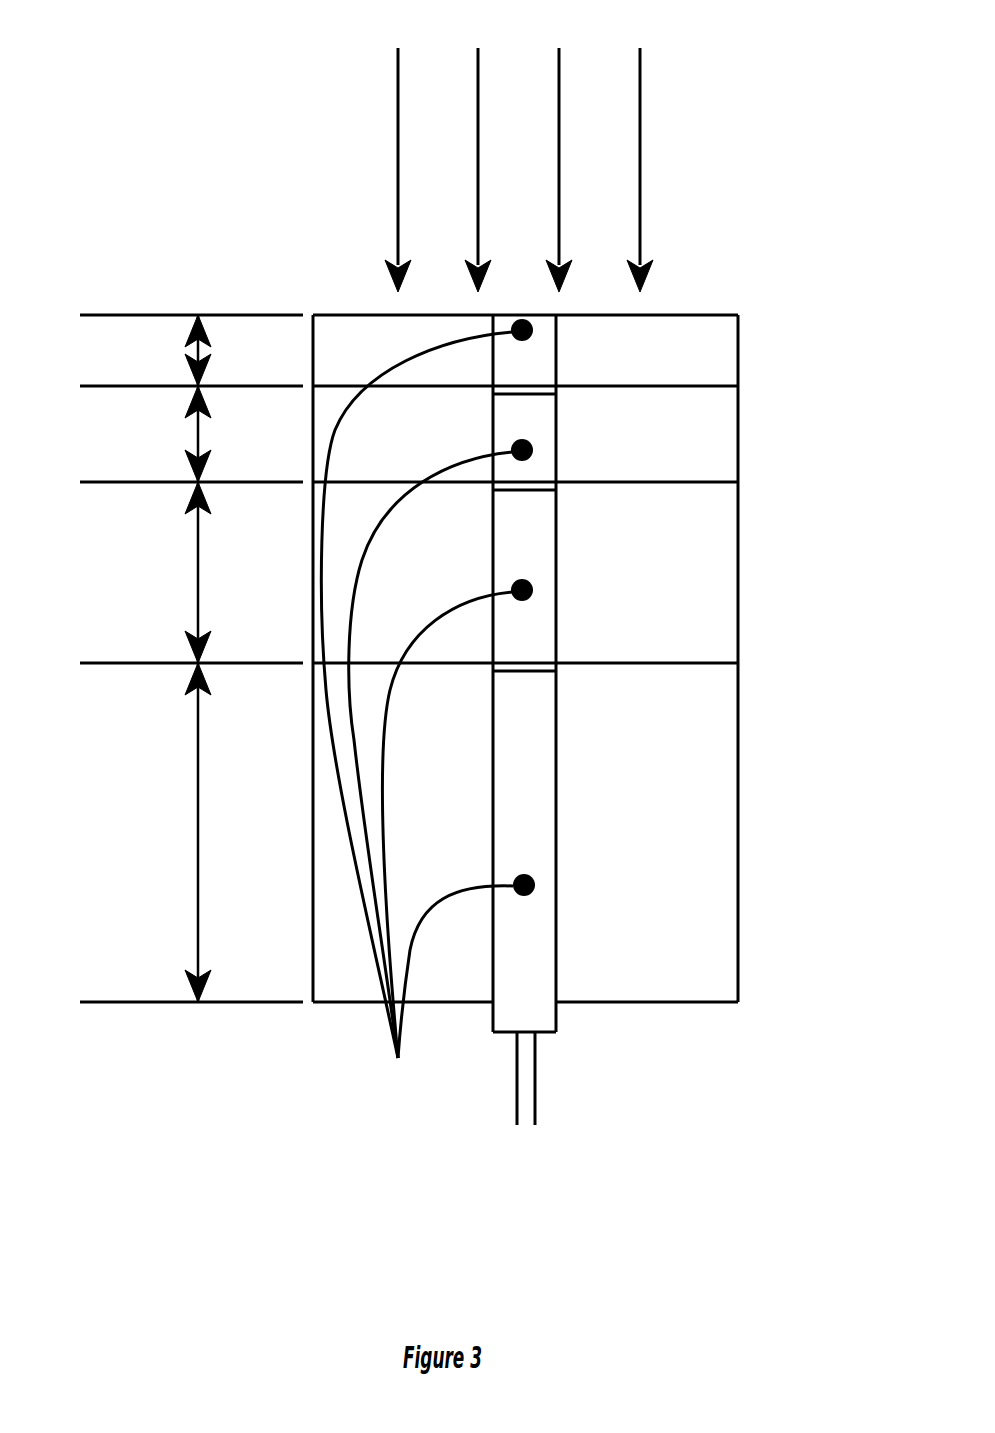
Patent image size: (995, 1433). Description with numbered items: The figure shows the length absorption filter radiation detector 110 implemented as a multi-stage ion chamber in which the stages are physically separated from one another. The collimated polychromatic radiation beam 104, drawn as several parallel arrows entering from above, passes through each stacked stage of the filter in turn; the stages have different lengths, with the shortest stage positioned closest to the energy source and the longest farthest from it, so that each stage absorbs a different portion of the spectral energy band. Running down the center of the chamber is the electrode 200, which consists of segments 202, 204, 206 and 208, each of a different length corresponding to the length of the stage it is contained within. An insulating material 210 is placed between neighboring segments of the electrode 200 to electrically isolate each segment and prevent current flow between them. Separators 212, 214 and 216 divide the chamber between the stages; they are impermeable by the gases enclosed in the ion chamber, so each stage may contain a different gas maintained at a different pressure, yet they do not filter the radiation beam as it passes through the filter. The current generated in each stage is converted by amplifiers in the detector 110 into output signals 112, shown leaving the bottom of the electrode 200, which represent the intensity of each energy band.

The collimated polychromatic radiation beam 104 is at (519, 152).
The radiation detector 110 is at (105, 1162).
The output signals 112 is at (527, 1063).
The electrode 200 is at (428, 706).
The electrode segment 202 is at (548, 332).
The electrode segment 204 is at (543, 427).
The electrode segment 206 is at (537, 638).
The electrode segment 208 is at (533, 836).
The insulating material 210 is at (500, 389).
The separator 212 is at (703, 386).
The separator 214 is at (717, 483).
The separator 216 is at (717, 663).